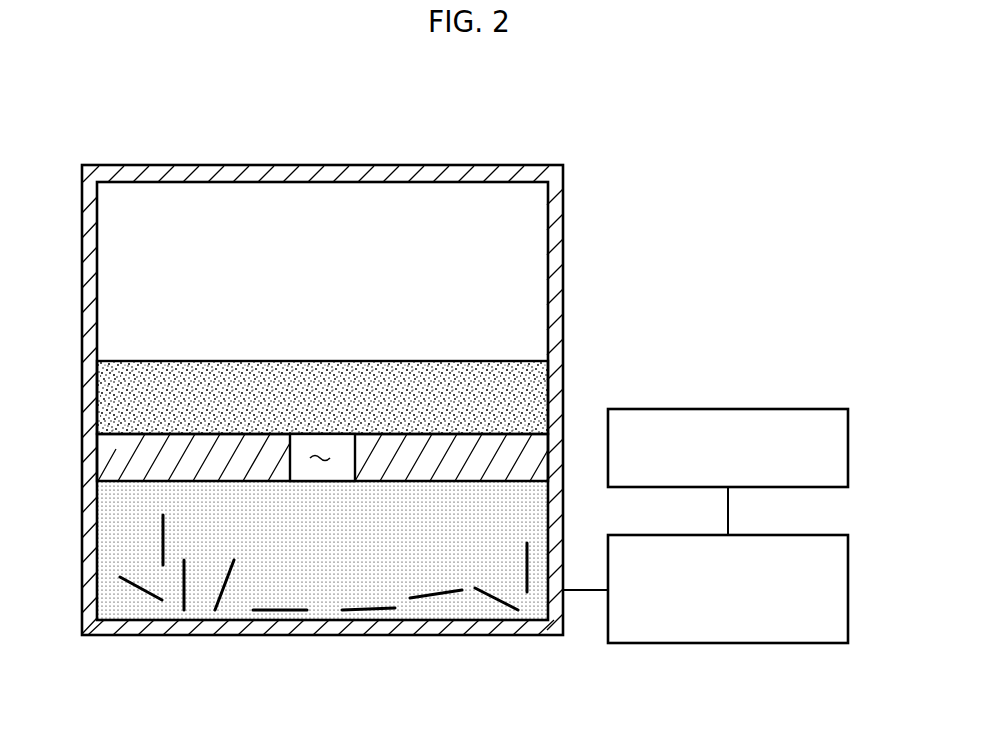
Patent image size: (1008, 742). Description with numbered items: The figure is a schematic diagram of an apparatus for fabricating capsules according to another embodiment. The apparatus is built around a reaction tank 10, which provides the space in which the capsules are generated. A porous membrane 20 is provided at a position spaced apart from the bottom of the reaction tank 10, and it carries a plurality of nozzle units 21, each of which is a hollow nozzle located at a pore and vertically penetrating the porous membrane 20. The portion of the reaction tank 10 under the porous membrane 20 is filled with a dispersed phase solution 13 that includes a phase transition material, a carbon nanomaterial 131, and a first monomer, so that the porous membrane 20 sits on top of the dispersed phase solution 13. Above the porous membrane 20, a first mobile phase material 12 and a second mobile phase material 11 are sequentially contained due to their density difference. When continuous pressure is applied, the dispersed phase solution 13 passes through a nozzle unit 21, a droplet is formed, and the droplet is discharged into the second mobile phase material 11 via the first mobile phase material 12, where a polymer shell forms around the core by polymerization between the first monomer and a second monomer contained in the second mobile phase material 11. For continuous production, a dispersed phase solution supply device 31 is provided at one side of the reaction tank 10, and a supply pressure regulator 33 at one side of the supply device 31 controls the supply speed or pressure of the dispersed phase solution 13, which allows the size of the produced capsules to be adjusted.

The reaction tank 10 is at (371, 165).
The second mobile phase material 11 is at (113, 293).
The first mobile phase material 12 is at (107, 398).
The dispersed phase solution 13 is at (472, 606).
The carbon nanomaterial 131 is at (140, 590).
The porous membrane 20 is at (113, 455).
The nozzle unit 21 is at (320, 455).
The dispersed phase solution supply device 31 is at (848, 590).
The supply pressure regulator 33 is at (848, 449).